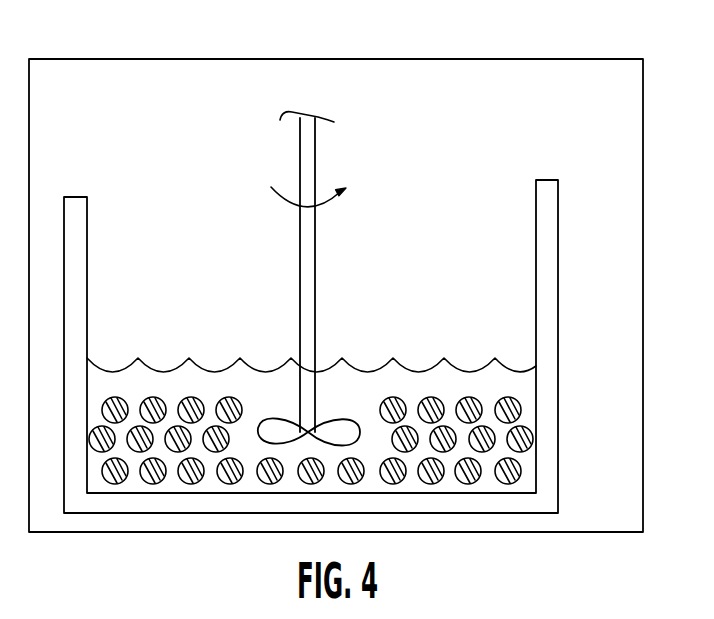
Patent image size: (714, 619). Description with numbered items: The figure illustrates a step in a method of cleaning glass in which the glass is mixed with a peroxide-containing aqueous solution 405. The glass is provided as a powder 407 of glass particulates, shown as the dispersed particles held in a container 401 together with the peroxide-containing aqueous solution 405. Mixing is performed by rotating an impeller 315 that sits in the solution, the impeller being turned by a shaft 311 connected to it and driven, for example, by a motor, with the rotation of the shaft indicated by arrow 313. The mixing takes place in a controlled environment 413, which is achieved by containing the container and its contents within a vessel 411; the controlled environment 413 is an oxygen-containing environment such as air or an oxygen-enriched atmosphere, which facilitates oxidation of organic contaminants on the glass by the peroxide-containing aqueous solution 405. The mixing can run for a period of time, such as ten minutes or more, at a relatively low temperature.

The container 401 is at (545, 180).
The peroxide-containing aqueous solution 405 is at (427, 386).
The powder 407 is at (507, 372).
The vessel 411 is at (617, 59).
The controlled environment 413 is at (519, 85).
The shaft 311 is at (316, 137).
The arrow 313 is at (328, 204).
The impeller 315 is at (263, 413).